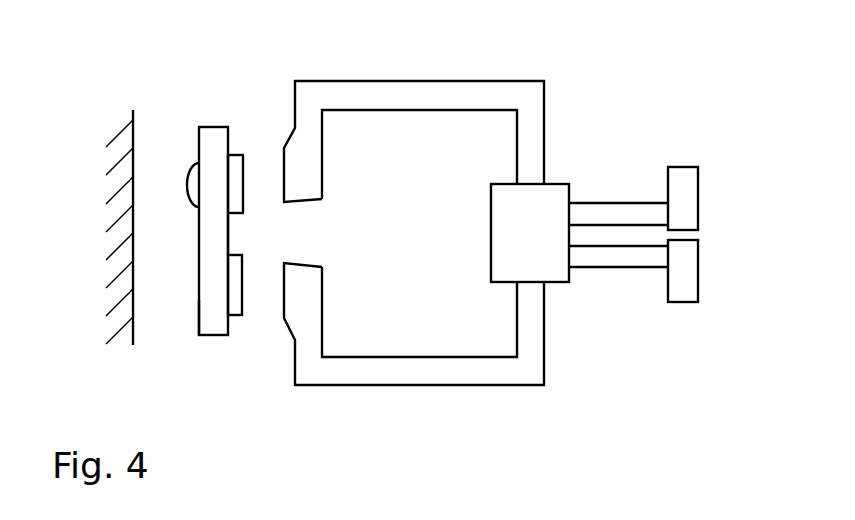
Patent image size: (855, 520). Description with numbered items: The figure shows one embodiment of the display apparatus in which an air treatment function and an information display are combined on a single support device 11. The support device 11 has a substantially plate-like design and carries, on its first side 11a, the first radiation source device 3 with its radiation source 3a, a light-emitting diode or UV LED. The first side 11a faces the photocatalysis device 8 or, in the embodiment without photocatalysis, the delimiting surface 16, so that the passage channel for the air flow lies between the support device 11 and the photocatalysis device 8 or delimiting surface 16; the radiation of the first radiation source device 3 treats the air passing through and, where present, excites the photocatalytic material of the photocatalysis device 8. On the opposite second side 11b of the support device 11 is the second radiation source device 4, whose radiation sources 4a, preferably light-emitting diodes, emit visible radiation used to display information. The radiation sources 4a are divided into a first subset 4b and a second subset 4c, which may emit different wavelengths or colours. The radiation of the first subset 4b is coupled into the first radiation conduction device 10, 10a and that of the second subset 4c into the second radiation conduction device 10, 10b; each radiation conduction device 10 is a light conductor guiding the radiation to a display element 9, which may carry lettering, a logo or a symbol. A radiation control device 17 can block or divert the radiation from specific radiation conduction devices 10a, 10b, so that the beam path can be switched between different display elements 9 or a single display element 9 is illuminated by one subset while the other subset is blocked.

The first radiation source device 3 is at (173, 158).
The radiation source 3a is at (190, 172).
The second radiation source device 4 is at (251, 238).
The radiation source 4a is at (251, 238).
The first subset 4b is at (233, 155).
The second subset 4c is at (237, 315).
The photocatalysis device 8 is at (149, 209).
The delimiting surface 16 is at (136, 112).
The display element 9 is at (690, 190).
The radiation conduction device 10 is at (414, 235).
The first radiation conduction device 10a is at (432, 80).
The second radiation conduction device 10b is at (410, 387).
The support device 11 is at (228, 280).
The first side 11a is at (197, 330).
The second side 11b is at (229, 240).
The radiation control device 17 is at (553, 188).